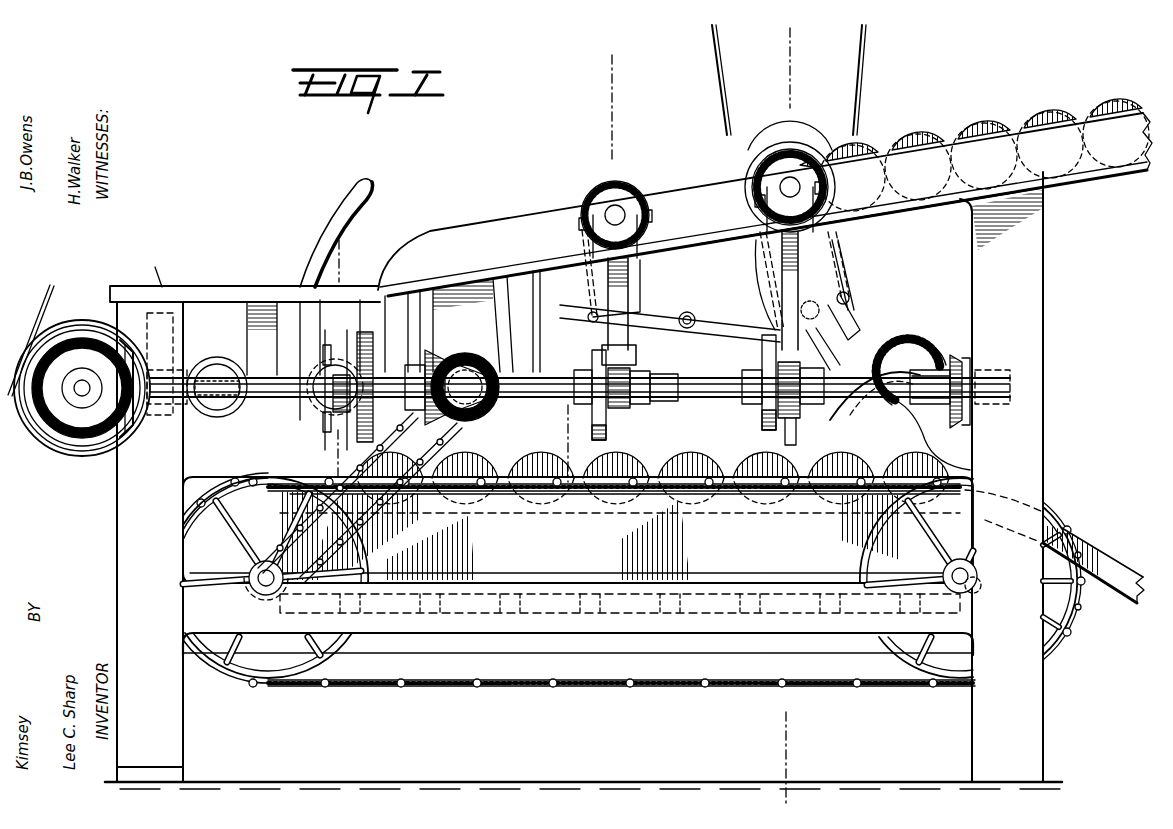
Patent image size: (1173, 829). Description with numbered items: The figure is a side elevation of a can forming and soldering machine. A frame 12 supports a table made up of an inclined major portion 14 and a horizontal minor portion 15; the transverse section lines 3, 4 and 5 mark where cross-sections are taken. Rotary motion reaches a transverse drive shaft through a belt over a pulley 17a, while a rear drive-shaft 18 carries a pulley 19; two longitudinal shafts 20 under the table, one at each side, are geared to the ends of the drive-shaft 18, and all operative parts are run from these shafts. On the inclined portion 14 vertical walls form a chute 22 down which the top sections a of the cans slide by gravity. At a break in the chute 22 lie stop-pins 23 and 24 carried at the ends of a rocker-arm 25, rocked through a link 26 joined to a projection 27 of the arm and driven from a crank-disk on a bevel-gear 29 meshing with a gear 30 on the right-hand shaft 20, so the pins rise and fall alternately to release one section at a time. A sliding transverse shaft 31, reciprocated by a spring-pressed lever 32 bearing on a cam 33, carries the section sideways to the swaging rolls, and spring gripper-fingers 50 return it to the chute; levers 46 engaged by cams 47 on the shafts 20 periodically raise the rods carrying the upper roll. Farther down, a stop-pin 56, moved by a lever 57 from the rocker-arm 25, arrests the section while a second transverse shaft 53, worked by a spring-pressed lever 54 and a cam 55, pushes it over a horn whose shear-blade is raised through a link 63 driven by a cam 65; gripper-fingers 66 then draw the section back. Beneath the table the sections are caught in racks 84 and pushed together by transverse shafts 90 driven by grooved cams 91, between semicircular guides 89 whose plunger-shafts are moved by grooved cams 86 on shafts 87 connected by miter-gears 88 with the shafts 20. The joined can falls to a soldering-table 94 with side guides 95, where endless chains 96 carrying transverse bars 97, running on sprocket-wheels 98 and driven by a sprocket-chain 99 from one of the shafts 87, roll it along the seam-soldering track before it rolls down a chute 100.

The section line 3 3 is at (792, 415).
The section line 4 4 is at (592, 259).
The section line 5 5 is at (336, 329).
The frame 12 is at (583, 480).
The inclined major portion of table 14 is at (900, 205).
The horizontal minor portion of table 15 is at (228, 290).
The pulley 17a is at (760, 148).
The drive-shaft 18 is at (80, 392).
The pulley 19 is at (60, 322).
The longitudinal shafts 20 is at (710, 394).
The chute 22 is at (1040, 104).
The stop-pin 23 is at (838, 270).
The stop-pin 24 is at (775, 286).
The rocker-arm 25 is at (845, 308).
The link 26 is at (848, 370).
The projection 27 is at (828, 335).
The bevel-gear 29 is at (922, 368).
The gear 30 is at (965, 358).
The transverse shaft 31 is at (792, 184).
The spring-pressed lever 32 is at (770, 350).
The cam 33 is at (770, 420).
The levers 46 is at (800, 422).
The cams 47 is at (806, 404).
The spring gripper-fingers 50 is at (752, 200).
The transverse shaft 53 is at (618, 212).
The spring-pressed lever 54 is at (644, 311).
The cam 55 is at (610, 432).
The stop-pin 56 is at (600, 305).
The lever 57 is at (712, 322).
The link 63 is at (636, 410).
The cam 65 is at (648, 402).
The gripper-fingers 66 is at (582, 226).
The racks 84 is at (318, 342).
The grooved cams 86 is at (222, 416).
The shafts 87 is at (475, 380).
The miter-gears 88 is at (495, 410).
The semicircular guides 89 is at (352, 354).
The transverse shafts 90 is at (312, 398).
The grooved cams 91 is at (386, 412).
The soldering-table 94 is at (625, 522).
The side guides 95 is at (590, 492).
The endless chains 96 is at (890, 688).
The transverse bars 97 is at (850, 690).
The sprocket-wheels 98 is at (1062, 585).
The sprocket-chain 99 is at (452, 442).
The chute 100 is at (1120, 578).
The top section of can a is at (992, 125).